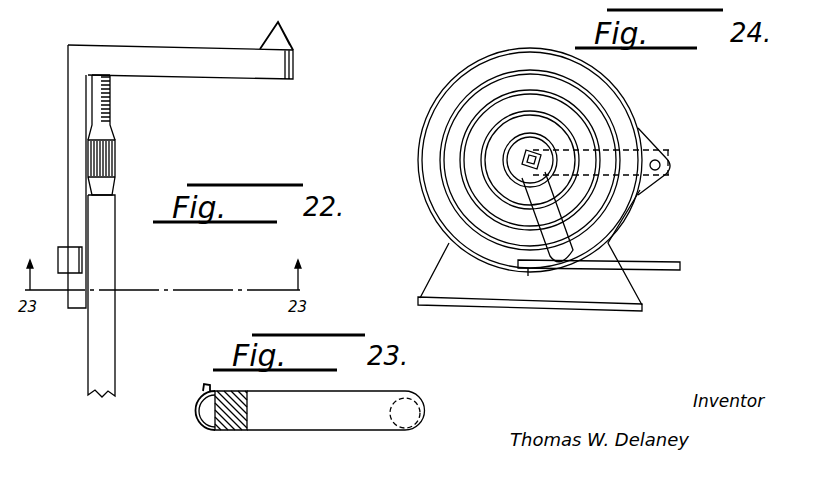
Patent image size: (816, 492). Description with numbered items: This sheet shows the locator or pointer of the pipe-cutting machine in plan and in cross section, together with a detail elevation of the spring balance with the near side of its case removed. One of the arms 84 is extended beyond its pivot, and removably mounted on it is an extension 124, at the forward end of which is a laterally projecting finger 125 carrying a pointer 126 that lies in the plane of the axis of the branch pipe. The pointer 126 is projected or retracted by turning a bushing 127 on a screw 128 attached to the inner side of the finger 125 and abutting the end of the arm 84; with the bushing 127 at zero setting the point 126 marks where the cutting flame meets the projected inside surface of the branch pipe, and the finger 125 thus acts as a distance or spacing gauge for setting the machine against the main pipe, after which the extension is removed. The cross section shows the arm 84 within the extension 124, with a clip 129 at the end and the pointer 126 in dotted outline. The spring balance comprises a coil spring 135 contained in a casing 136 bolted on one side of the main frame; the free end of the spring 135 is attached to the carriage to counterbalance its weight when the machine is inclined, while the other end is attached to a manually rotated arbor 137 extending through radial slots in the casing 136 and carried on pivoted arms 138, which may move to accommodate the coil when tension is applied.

In FIG. 22, the arm 84 is at (110, 347).
In FIG. 23, the arm 84 is at (237, 425).
In FIG. 22, the extension 124 is at (68, 178).
In FIG. 23, the extension 124 is at (208, 418).
In FIG. 22, the finger 125 is at (198, 30).
In FIG. 23, the finger 125 is at (322, 422).
In FIG. 22, the pointer 126 is at (283, 33).
In FIG. 23, the pointer 126 is at (410, 403).
In FIG. 22, the bushing 127 is at (116, 165).
In FIG. 22, the screw 128 is at (112, 115).
In FIG. 22, the clip 129 is at (58, 252).
In FIG. 23, the clip 129 is at (193, 405).
In FIG. 24, the coil spring 135 is at (632, 262).
In FIG. 24, the casing 136 is at (419, 153).
In FIG. 24, the arbor 137 is at (534, 150).
In FIG. 24, the pivoted arms 138 is at (618, 165).